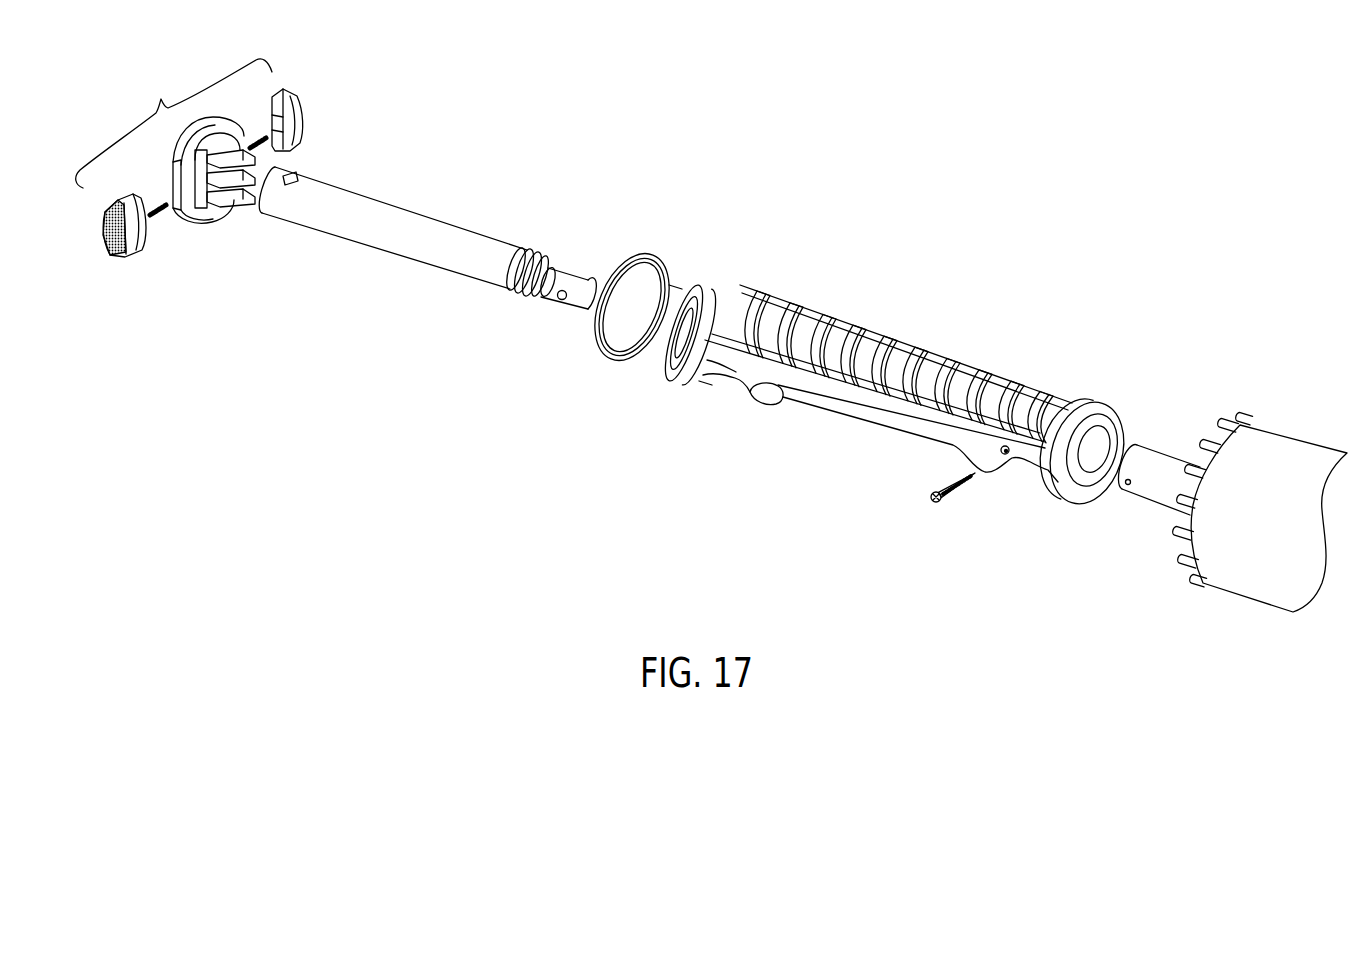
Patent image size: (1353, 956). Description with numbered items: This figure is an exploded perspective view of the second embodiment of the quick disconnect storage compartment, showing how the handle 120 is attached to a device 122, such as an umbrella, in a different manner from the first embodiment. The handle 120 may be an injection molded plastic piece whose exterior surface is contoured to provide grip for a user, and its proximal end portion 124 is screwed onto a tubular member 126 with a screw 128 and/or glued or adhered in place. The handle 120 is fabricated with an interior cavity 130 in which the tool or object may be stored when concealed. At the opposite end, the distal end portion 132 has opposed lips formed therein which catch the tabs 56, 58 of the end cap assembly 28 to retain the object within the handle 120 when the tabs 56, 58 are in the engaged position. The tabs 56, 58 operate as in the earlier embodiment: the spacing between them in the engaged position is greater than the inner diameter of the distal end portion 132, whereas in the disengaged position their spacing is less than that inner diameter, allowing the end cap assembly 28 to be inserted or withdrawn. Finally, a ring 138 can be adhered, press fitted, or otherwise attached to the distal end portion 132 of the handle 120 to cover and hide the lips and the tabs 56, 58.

The end cap assembly 28 is at (174, 141).
The tab 56 is at (303, 120).
The tab 58 is at (143, 233).
The ring 138 is at (643, 256).
The handle 120 is at (921, 293).
The device 122 is at (1281, 394).
The proximal end portion 124 is at (921, 503).
The tubular member 126 is at (1153, 483).
The screw 128 is at (965, 486).
The interior cavity 130 is at (1092, 450).
The distal end portion 132 is at (662, 393).